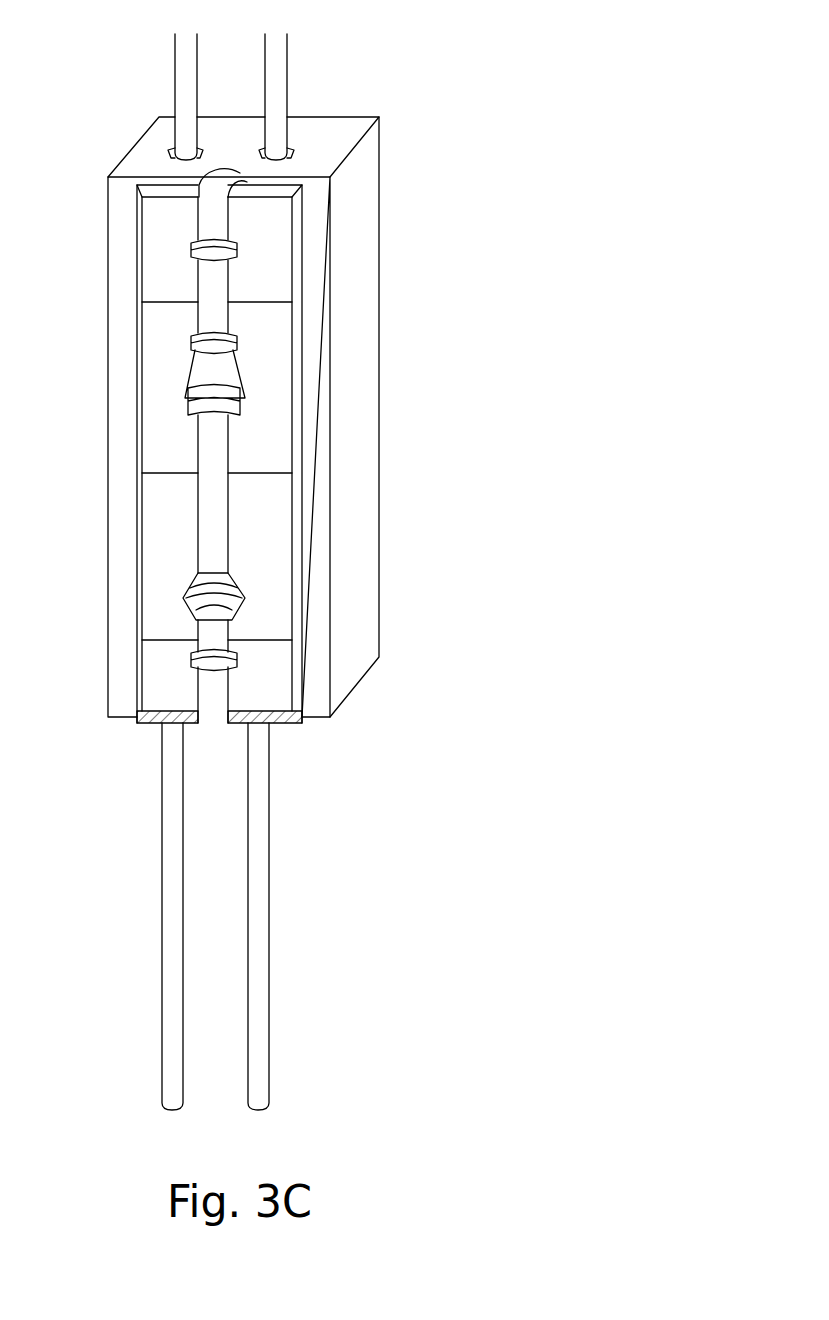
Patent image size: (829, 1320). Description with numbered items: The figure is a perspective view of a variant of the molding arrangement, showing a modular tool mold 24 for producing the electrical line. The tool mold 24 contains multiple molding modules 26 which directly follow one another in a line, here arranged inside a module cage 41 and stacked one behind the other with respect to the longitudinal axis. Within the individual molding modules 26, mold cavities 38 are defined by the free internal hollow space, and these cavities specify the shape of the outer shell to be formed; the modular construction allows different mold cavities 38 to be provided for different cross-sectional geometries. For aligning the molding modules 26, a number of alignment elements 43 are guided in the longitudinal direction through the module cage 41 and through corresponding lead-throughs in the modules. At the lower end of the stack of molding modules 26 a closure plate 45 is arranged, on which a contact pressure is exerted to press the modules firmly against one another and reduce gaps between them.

The tool mold 24 is at (249, 572).
The module cage 41 is at (108, 215).
The alignment elements 43 is at (187, 98).
The molding modules 26 is at (160, 255).
The mold cavities 38 is at (212, 283).
The closure plate 45 is at (293, 723).